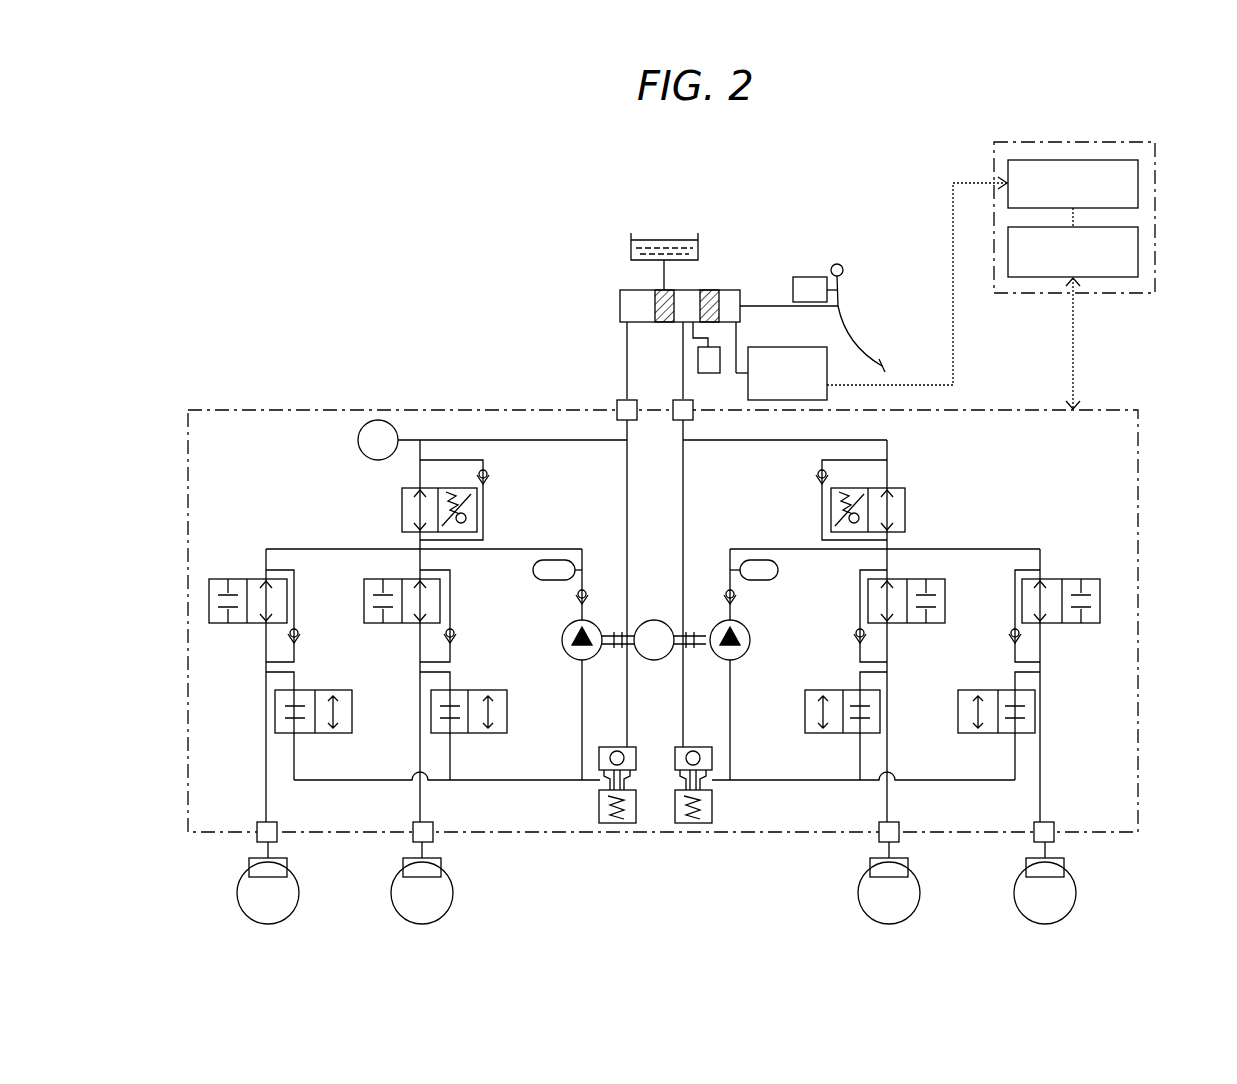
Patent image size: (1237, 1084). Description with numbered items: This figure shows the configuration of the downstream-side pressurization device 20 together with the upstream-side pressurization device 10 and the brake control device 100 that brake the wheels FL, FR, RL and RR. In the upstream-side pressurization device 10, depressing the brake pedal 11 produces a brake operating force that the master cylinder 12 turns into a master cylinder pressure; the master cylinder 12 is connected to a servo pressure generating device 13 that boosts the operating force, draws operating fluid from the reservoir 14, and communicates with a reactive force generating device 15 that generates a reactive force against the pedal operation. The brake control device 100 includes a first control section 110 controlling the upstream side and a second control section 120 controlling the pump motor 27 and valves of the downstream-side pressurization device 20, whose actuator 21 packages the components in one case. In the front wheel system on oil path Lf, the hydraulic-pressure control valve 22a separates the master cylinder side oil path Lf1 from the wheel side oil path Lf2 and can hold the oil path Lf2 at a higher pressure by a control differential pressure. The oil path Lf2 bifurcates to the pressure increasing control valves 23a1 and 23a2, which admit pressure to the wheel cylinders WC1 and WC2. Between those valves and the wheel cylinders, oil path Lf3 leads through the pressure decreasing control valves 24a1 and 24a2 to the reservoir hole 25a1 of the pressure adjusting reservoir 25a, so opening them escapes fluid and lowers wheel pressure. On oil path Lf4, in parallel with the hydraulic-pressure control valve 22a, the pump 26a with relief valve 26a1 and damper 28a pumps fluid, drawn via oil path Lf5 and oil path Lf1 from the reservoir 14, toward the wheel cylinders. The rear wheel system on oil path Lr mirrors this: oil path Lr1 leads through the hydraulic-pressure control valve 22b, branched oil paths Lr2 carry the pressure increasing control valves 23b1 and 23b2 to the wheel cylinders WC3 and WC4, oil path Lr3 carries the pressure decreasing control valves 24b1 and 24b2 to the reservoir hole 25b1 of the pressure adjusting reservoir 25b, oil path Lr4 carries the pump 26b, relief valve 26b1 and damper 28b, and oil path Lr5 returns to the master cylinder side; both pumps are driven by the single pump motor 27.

The upstream-side pressurization device 10 is at (590, 230).
The brake pedal 11 is at (848, 327).
The master cylinder 12 is at (620, 306).
The servo pressure generating device 13 is at (762, 347).
The reservoir 14 is at (698, 250).
The reactive force generating device 15 is at (700, 373).
The downstream-side pressurization device 20 is at (390, 322).
The actuator 21 is at (258, 408).
The hydraulic-pressure control valve 22a is at (402, 513).
The hydraulic-pressure control valve 22b is at (905, 513).
The pressure increasing control valve 23a1 is at (233, 578).
The pressure increasing control valve 23a2 is at (390, 578).
The pressure increasing control valve 23b1 is at (915, 578).
The pressure increasing control valve 23b2 is at (1070, 578).
The pressure decreasing control valve 24a1 is at (320, 690).
The pressure decreasing control valve 24a2 is at (480, 690).
The pressure decreasing control valve 24b1 is at (830, 690).
The pressure decreasing control valve 24b2 is at (982, 690).
The pressure adjusting reservoir 25a is at (617, 823).
The pressure adjusting reservoir 25b is at (693, 823).
The reservoir hole 25a1 is at (600, 782).
The reservoir hole 25b1 is at (712, 782).
The pump 26a is at (562, 640).
The pump 26b is at (750, 640).
The relief valve 26a1 is at (575, 598).
The relief valve 26b1 is at (738, 598).
The pump motor 27 is at (654, 660).
The damper 28a is at (533, 570).
The damper 28b is at (778, 570).
The brake control device 100 is at (990, 140).
The first control section 110 is at (1138, 183).
The second control section 120 is at (1138, 252).
The oil path Lf is at (490, 420).
The oil path Lr is at (943, 452).
The oil path Lf1 is at (605, 440).
The oil path Lf2 is at (266, 645).
The oil path Lf3 is at (442, 780).
The oil path Lf4 is at (505, 549).
The oil path Lf5 is at (627, 503).
The oil path Lr1 is at (790, 440).
The oil path Lr2 is at (887, 645).
The oil path Lr3 is at (856, 780).
The oil path Lr4 is at (805, 549).
The oil path Lr5 is at (683, 503).
The wheel cylinder WC1 is at (287, 862).
The wheel cylinder WC2 is at (442, 862).
The wheel cylinder WC3 is at (910, 862).
The wheel cylinder WC4 is at (1065, 862).
The wheel FL is at (290, 917).
The wheel FR is at (444, 917).
The wheel RL is at (911, 917).
The wheel RR is at (1067, 917).